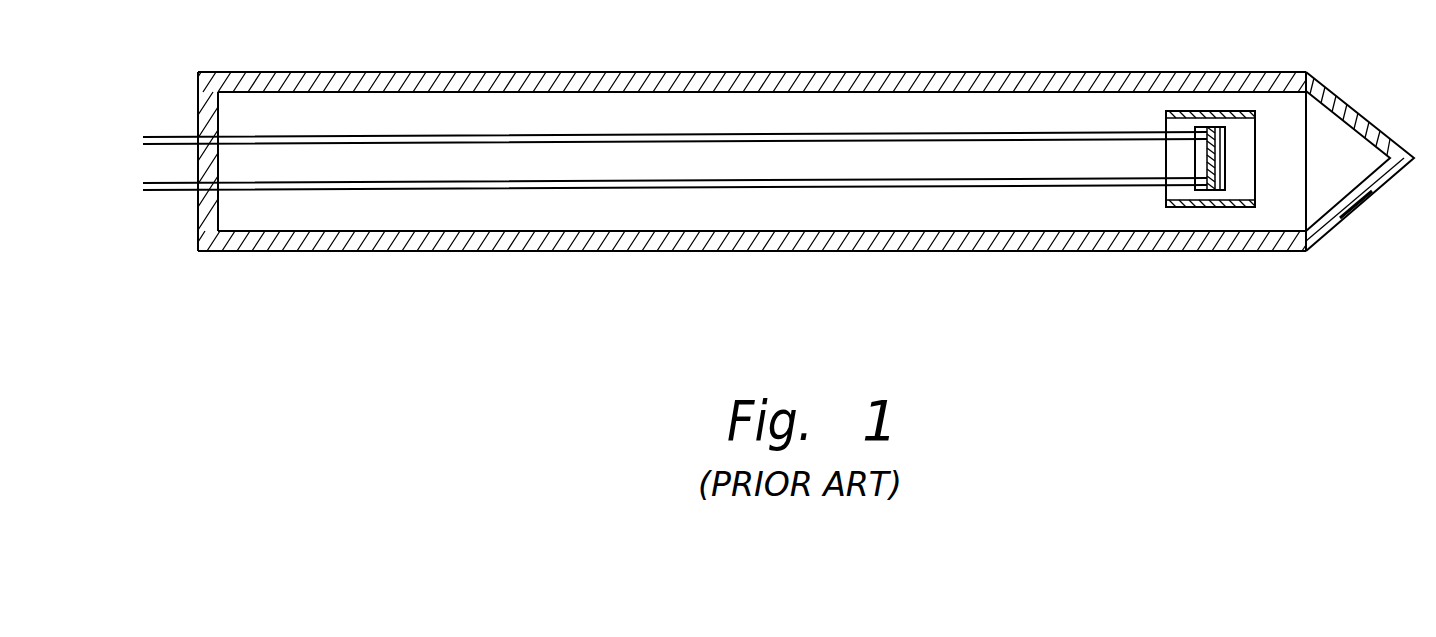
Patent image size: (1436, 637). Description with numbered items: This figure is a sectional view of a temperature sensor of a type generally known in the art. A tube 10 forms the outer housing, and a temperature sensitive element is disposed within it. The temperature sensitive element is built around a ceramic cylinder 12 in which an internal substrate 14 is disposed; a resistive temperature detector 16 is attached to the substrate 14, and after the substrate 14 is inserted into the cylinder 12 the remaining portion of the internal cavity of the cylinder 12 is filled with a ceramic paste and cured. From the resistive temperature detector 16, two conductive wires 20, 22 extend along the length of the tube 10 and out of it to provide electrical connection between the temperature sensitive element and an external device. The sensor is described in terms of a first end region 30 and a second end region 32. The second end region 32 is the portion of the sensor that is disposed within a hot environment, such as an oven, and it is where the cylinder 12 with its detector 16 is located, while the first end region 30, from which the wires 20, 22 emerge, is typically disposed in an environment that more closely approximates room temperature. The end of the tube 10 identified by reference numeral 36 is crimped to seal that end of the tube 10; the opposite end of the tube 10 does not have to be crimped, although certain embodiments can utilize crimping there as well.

The tube 10 is at (560, 88).
The ceramic cylinder 12 is at (1200, 108).
The internal substrate 14 is at (1200, 158).
The resistive temperature detector 16 is at (1212, 188).
The conductive wire 20 is at (170, 133).
The conductive wire 22 is at (172, 193).
The first end region 30 is at (292, 212).
The second end region 32 is at (1287, 110).
The crimped end of the tube 36 is at (1362, 202).